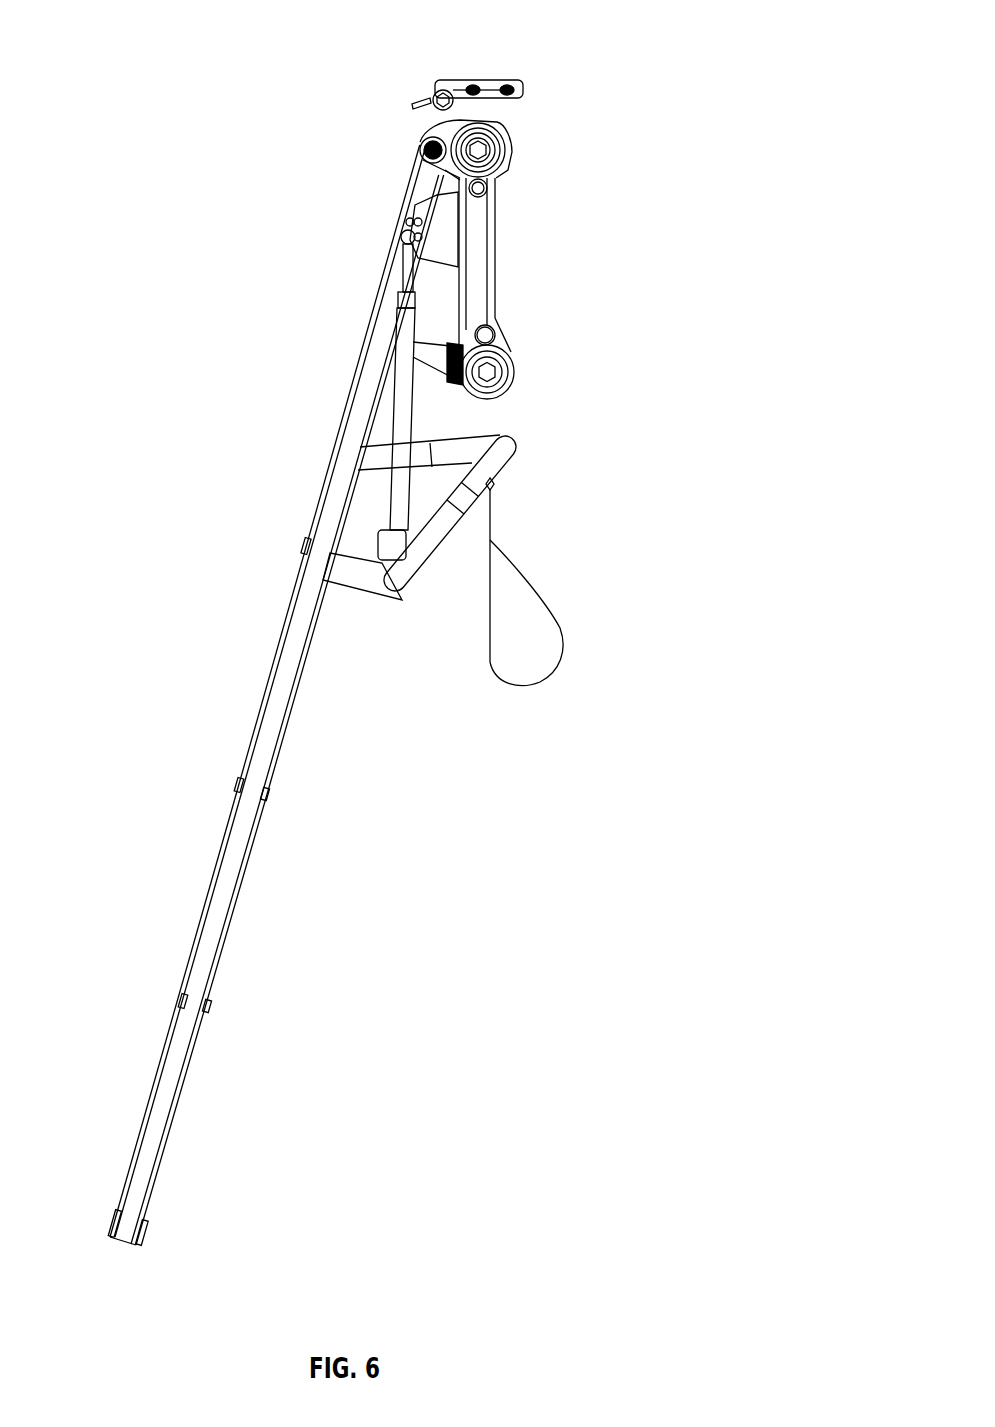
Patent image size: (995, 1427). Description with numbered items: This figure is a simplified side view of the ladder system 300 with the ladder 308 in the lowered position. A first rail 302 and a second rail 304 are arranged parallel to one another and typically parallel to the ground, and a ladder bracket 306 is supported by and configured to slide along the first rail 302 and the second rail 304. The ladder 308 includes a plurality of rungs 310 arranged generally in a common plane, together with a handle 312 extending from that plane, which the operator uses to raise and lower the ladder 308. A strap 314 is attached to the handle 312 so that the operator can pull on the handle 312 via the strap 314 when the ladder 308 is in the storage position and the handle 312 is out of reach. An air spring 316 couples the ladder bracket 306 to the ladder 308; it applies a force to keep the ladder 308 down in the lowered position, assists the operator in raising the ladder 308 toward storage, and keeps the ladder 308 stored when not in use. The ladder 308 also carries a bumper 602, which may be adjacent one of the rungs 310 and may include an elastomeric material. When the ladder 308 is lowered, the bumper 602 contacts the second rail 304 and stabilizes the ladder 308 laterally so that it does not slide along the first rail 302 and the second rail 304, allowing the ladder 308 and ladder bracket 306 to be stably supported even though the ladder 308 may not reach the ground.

The ladder system 300 is at (673, 76).
The first rail 302 is at (507, 157).
The second rail 304 is at (510, 378).
The ladder bracket 306 is at (494, 230).
The ladder 308 is at (267, 690).
The rungs 310 is at (172, 997).
The handle 312 is at (515, 466).
The strap 314 is at (550, 680).
The air spring 316 is at (390, 492).
The bumper 602 is at (455, 347).